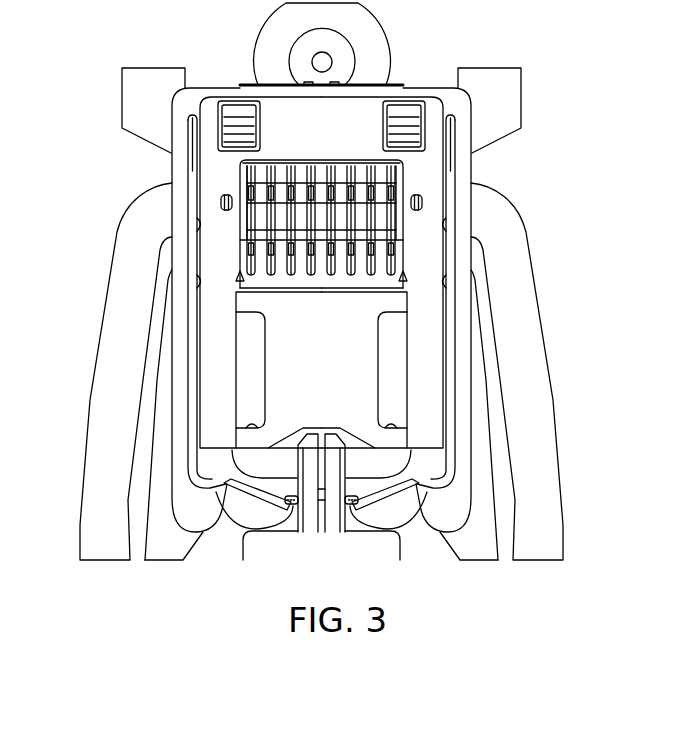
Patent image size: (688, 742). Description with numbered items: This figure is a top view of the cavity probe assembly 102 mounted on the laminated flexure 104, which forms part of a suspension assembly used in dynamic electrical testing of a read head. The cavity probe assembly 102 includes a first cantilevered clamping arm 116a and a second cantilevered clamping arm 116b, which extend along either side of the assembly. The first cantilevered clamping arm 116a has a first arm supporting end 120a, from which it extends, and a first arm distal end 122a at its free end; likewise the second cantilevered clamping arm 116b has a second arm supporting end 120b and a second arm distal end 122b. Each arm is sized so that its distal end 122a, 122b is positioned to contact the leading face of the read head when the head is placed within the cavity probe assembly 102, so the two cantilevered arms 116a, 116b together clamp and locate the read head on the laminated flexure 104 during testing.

The cavity probe assembly 102 is at (363, 95).
The laminated flexure 104 is at (514, 103).
The first cantilevered clamping arm 116a is at (471, 278).
The second cantilevered clamping arm 116b is at (172, 270).
The first arm supporting end 120a is at (440, 88).
The second arm supporting end 120b is at (206, 86).
The first arm distal end 122a is at (343, 462).
The second arm distal end 122b is at (300, 462).